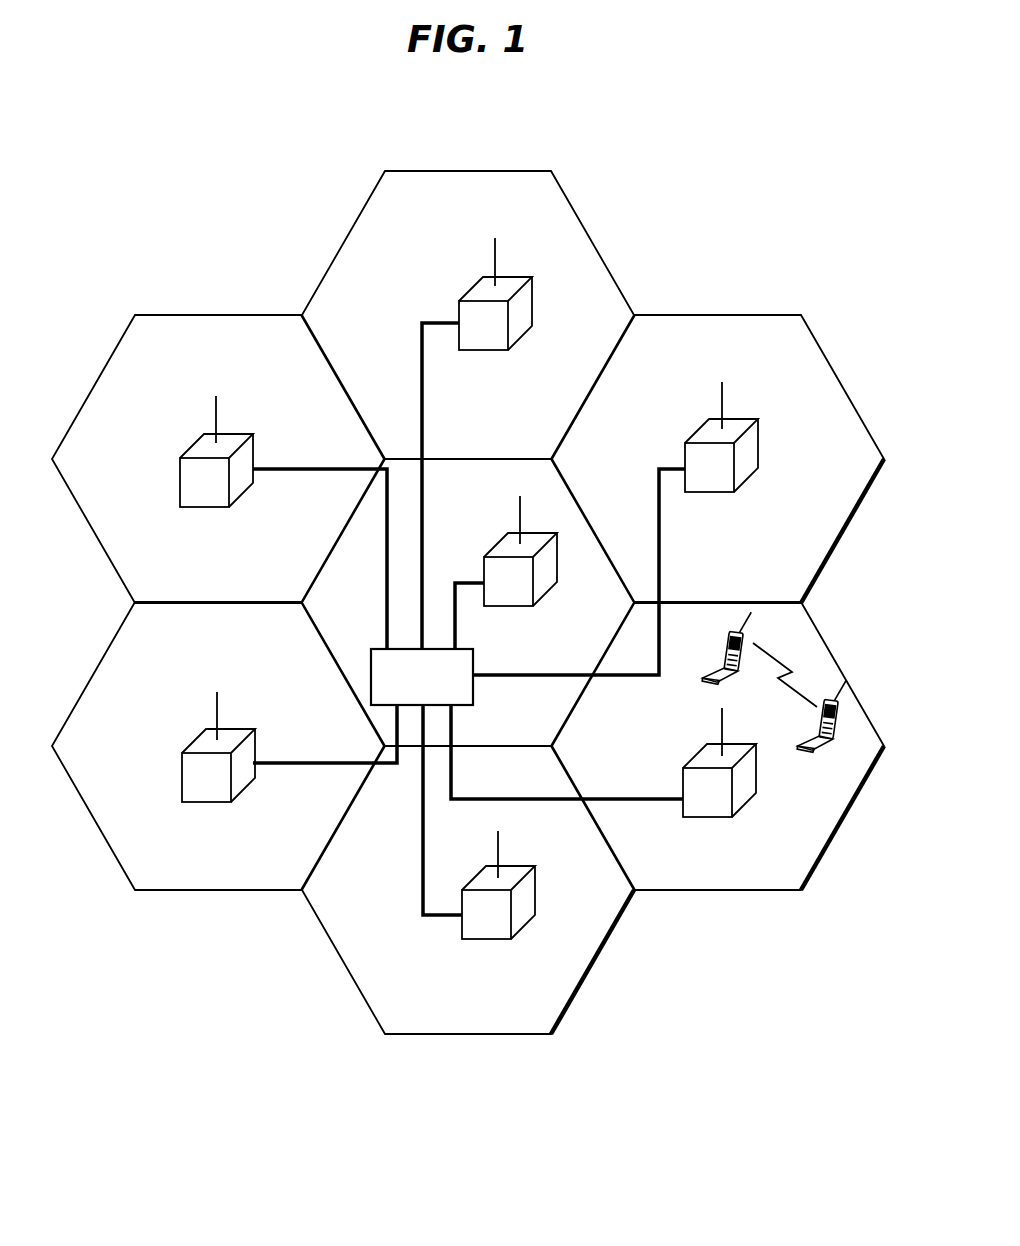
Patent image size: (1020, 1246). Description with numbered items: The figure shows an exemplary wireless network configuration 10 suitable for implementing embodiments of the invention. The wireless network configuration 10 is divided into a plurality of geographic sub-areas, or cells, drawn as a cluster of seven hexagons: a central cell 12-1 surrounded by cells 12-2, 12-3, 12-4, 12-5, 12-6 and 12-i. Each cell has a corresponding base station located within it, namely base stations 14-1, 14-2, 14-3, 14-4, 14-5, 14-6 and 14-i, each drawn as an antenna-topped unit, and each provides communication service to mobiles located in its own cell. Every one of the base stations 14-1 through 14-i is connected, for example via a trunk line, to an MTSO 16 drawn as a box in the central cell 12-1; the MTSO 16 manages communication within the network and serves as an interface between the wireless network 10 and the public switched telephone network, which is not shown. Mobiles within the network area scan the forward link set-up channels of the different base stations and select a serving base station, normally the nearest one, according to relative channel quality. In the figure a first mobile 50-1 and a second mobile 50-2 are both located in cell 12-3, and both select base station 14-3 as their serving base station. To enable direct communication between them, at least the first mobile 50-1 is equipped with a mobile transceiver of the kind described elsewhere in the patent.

The wireless network configuration 10 is at (692, 83).
The cell 12-i is at (494, 184).
The cell 12-1 is at (542, 726).
The cell 12-2 is at (712, 328).
The cell 12-3 is at (728, 882).
The cell 12-4 is at (448, 1023).
The cell 12-5 is at (188, 878).
The cell 12-6 is at (215, 328).
The base station 14-i is at (474, 283).
The base station 14-1 is at (502, 535).
The base station 14-2 is at (697, 428).
The base station 14-3 is at (693, 755).
The base station 14-4 is at (482, 938).
The base station 14-5 is at (197, 733).
The base station 14-6 is at (197, 440).
The MTSO 16 is at (371, 656).
The first mobile 50-1 is at (740, 610).
The second mobile 50-2 is at (841, 692).